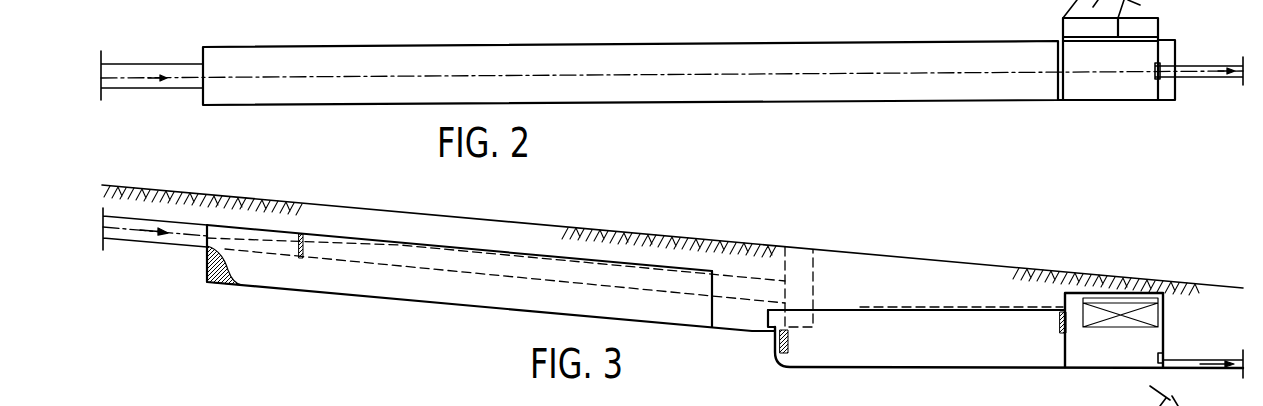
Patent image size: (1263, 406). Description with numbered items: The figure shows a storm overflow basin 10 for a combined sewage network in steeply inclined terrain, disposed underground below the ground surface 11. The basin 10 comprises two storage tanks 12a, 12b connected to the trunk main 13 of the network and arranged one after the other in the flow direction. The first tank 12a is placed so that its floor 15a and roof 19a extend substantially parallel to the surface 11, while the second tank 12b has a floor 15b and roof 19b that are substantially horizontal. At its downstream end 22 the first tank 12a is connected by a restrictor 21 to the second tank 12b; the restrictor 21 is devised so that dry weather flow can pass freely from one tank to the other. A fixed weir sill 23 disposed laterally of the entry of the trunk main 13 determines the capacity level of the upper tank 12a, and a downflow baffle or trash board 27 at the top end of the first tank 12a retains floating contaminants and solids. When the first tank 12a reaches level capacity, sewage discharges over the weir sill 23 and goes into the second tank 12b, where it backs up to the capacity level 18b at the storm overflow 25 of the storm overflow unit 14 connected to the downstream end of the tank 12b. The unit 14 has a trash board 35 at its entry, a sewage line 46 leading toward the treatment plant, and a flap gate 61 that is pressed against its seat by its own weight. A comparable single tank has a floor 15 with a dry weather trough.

In FIG. 3, the storm overflow basin 10 is at (758, 229).
In FIG. 3, the ground surface 11 is at (915, 258).
In FIG. 3, the first storage tank 12a is at (472, 287).
In FIG. 3, the second storage tank 12b is at (970, 345).
In FIG. 2, the trunk main 13 is at (190, 80).
In FIG. 3, the trunk main 13 is at (192, 236).
In FIG. 3, the storm overflow unit 14 is at (1095, 375).
In FIG. 2, the sill or floor 15 is at (632, 86).
In FIG. 3, the floor of first tank 15a is at (347, 293).
In FIG. 3, the floor of second tank 15b is at (1015, 367).
In FIG. 3, the capacity level 18b is at (960, 308).
In FIG. 3, the roof of first tank 19a is at (405, 248).
In FIG. 3, the roof of second tank 19b is at (837, 315).
In FIG. 3, the restrictor 21 is at (752, 328).
In FIG. 3, the downstream end of first tank 22 is at (715, 288).
In FIG. 3, the fixed weir sill 23 is at (223, 240).
In FIG. 2, the storm overflow 25 is at (1078, 35).
In FIG. 3, the downflow baffle or trash board 27 is at (303, 238).
In FIG. 3, the trash board 35 is at (1060, 320).
In FIG. 2, the sewage line 46 is at (1203, 66).
In FIG. 3, the sewage line 46 is at (1207, 360).
In FIG. 3, the flap gate 61 is at (1146, 313).